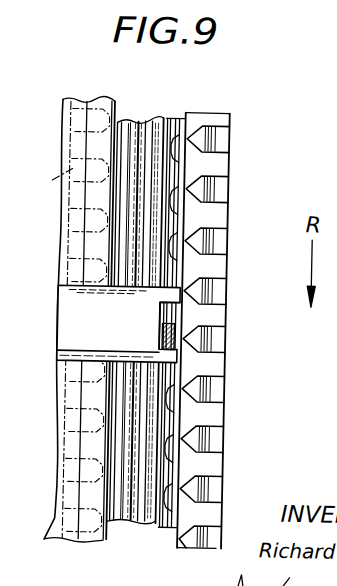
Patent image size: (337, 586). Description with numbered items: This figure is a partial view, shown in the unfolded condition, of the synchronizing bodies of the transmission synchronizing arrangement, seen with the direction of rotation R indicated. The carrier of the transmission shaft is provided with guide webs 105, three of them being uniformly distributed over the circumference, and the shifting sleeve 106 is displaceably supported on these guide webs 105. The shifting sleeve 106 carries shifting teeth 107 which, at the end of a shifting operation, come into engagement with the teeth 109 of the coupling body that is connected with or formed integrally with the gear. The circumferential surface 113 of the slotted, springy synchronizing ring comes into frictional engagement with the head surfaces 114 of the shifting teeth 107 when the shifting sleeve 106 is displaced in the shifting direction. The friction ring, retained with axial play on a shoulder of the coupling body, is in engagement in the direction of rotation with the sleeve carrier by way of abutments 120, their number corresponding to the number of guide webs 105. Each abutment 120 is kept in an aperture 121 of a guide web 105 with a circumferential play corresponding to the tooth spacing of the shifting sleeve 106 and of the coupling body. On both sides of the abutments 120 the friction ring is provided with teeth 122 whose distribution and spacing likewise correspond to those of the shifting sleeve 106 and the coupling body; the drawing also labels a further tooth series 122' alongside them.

The guide web 105 is at (61, 329).
The shifting sleeve 106 is at (71, 103).
The shifting teeth 107 is at (66, 224).
The teeth of the coupling body 109 is at (222, 140).
The circumferential surface of the synchronizing ring 113 is at (136, 514).
The head surfaces of the shifting teeth 114 is at (92, 164).
The abutment 120 is at (179, 322).
The aperture 121 is at (163, 321).
The teeth of the friction ring 122 is at (217, 323).
The follower track 122' is at (141, 303).